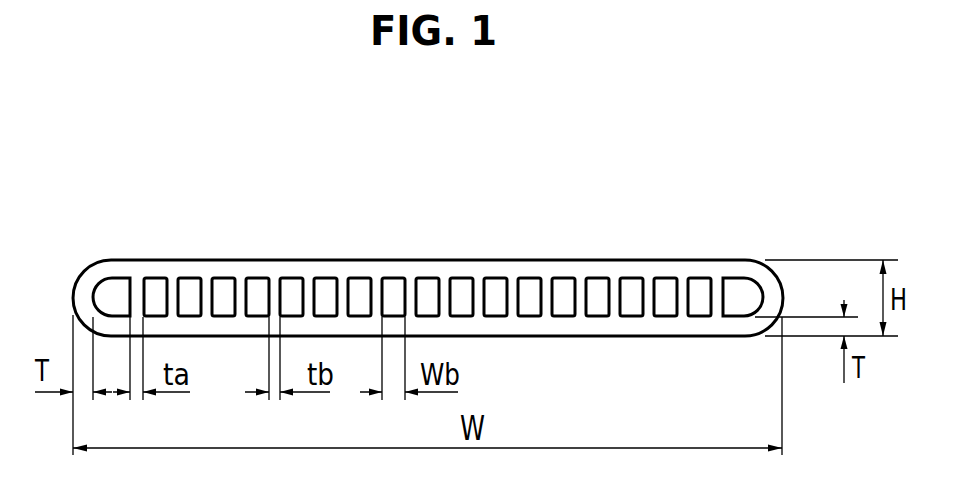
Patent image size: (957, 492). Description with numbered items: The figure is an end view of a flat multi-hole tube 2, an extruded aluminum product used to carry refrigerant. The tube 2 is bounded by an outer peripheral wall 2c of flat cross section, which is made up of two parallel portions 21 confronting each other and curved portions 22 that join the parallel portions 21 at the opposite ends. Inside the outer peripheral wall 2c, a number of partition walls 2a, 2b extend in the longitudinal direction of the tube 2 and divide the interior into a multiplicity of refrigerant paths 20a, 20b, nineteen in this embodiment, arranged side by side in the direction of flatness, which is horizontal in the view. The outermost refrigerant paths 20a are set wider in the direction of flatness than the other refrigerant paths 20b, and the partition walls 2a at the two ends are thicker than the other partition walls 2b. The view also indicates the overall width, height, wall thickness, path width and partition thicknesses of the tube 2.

The flat tube 2 is at (563, 212).
The partition walls at opposite ends 2a is at (146, 290).
The partition walls 2b is at (248, 290).
The outer peripheral wall 2c is at (637, 267).
The outermost refrigerant paths 20a is at (111, 280).
The refrigerant paths 20b is at (356, 290).
The parallel portions 21 is at (417, 268).
The curved portions 22 is at (67, 280).